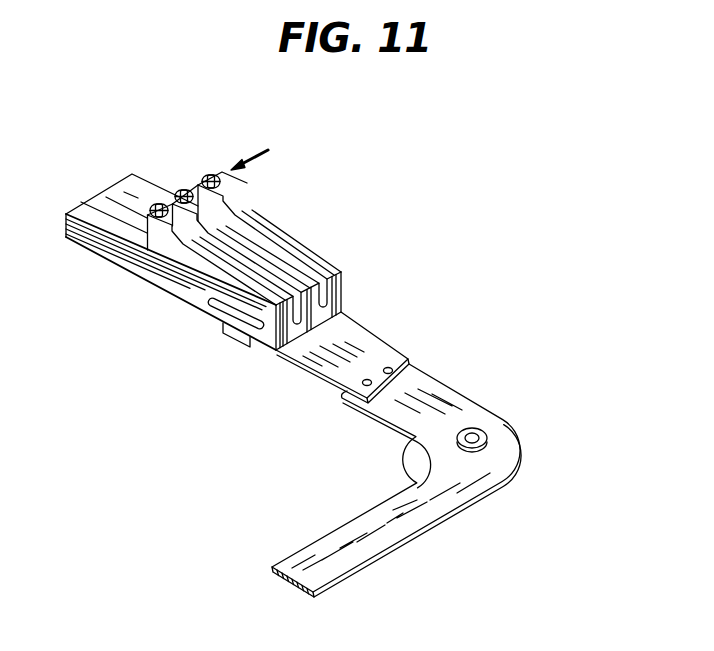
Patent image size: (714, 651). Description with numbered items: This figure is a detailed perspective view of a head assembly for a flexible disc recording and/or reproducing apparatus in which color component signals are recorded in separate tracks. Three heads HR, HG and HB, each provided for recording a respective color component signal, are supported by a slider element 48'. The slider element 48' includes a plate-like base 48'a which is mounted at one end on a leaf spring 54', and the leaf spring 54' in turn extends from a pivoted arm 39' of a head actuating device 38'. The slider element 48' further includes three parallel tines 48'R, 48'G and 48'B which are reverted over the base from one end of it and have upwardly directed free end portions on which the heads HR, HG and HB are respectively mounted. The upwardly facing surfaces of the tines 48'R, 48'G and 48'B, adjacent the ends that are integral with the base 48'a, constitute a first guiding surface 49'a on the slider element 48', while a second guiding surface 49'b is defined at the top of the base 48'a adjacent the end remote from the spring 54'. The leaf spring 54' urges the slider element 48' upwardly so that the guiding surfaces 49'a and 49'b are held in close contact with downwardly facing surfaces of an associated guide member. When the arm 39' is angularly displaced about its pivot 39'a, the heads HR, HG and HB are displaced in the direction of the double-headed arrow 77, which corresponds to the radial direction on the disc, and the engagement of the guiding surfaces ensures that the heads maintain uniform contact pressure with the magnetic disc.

The second guiding surface 49'b is at (122, 191).
The plate-like base 48'a is at (159, 264).
The slider element 48' is at (171, 282).
The head HR is at (160, 204).
The head HG is at (187, 190).
The head HB is at (212, 175).
The double-headed arrow 77 is at (246, 160).
The tine 48'R is at (226, 235).
The tine 48'G is at (258, 238).
The tine 48'B is at (297, 225).
The first guiding surface 49'a is at (367, 287).
The leaf spring 54' is at (346, 350).
The pivot 39'a is at (520, 418).
The head actuating device 38' is at (396, 480).
The pivoted arm 39' is at (359, 559).